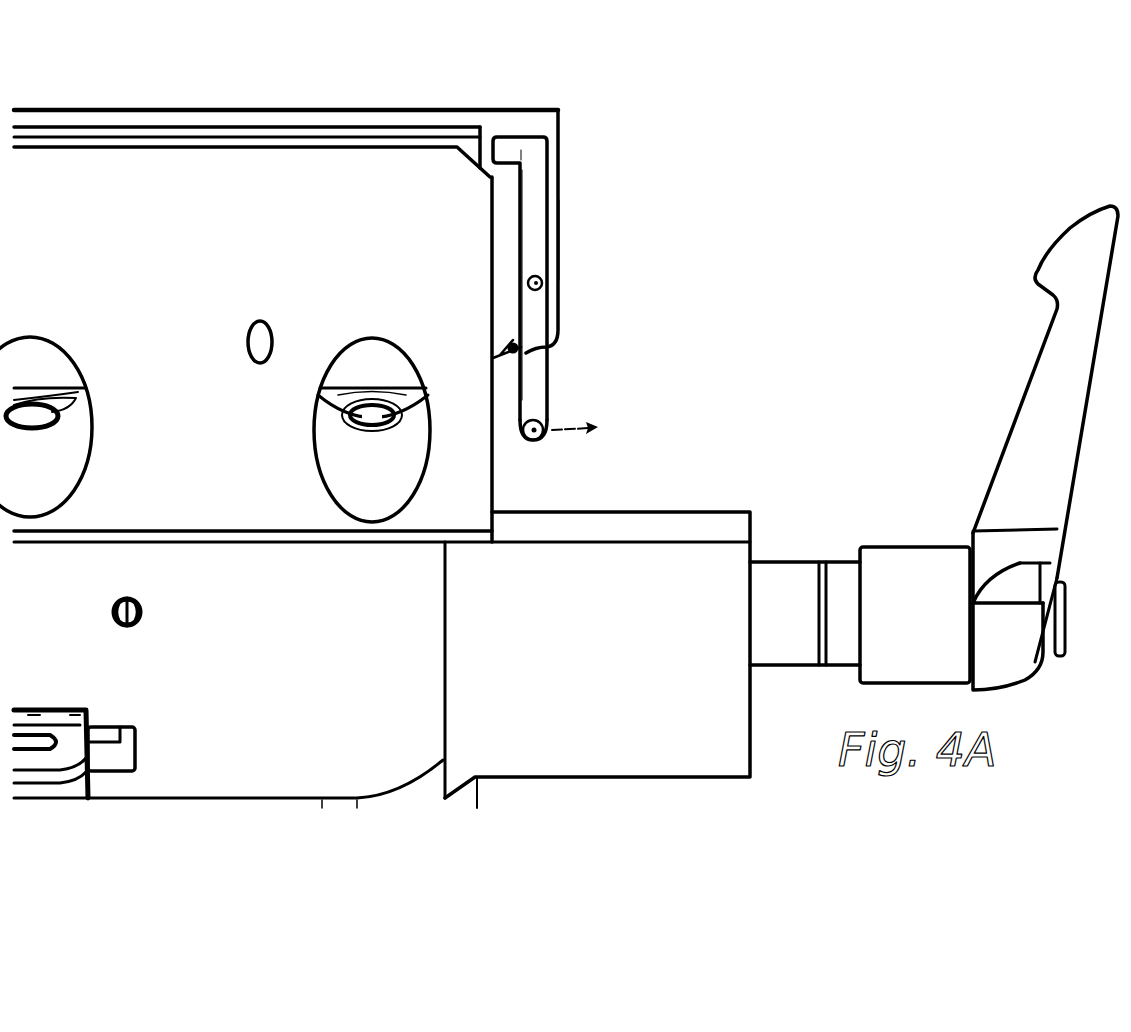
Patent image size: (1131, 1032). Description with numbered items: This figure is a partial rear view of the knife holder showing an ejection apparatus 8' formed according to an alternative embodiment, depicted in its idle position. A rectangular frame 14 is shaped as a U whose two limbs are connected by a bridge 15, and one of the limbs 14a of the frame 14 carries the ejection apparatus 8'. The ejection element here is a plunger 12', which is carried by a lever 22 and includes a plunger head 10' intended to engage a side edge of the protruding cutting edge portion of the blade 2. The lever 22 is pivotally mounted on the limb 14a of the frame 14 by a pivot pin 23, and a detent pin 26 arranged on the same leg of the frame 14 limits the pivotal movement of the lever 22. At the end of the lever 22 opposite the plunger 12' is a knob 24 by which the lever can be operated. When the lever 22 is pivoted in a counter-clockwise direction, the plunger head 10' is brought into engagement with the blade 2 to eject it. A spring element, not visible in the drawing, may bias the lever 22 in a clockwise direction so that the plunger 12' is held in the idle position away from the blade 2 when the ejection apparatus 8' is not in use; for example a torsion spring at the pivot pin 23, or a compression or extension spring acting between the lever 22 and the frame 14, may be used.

The bridge 15 is at (353, 118).
The blade 2 is at (479, 142).
The plunger head 10' is at (527, 234).
The plunger 12' is at (577, 113).
The lever 22 is at (538, 185).
The rectangular frame 14 is at (554, 212).
The limb of frame 14a is at (560, 238).
The pivot pin 23 is at (545, 282).
The detent pin 26 is at (510, 347).
The knob 24 is at (534, 441).
The ejection apparatus 8' is at (875, 420).